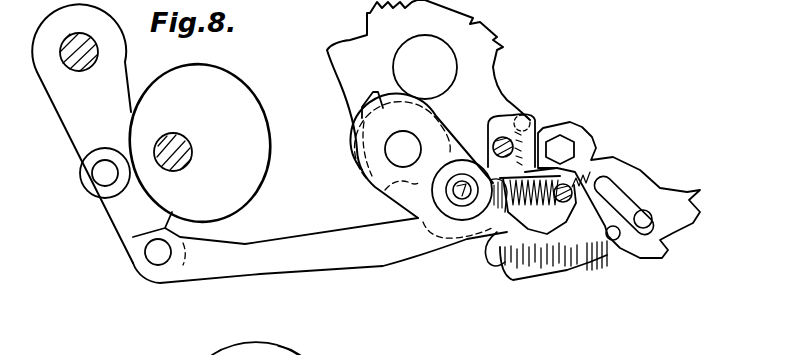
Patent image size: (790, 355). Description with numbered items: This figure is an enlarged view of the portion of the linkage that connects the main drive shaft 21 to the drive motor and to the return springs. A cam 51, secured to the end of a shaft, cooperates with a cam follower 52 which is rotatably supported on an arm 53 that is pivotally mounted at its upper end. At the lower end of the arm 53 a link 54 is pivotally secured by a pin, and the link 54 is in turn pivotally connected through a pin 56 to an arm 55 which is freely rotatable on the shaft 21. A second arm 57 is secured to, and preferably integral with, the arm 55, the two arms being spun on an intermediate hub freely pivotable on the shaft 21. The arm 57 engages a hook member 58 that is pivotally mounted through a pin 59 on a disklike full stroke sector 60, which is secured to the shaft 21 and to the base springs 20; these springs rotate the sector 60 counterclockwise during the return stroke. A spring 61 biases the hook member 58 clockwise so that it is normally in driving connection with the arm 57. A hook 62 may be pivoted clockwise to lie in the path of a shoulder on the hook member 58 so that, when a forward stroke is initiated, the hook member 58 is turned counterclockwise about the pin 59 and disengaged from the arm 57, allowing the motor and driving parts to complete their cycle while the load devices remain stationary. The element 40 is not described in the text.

The base springs 20 is at (553, 226).
The main drive shaft 21 is at (397, 148).
The drum 40 is at (263, 353).
The cam 51 is at (238, 146).
The cam follower 52 is at (88, 179).
The arm 53 is at (110, 220).
The link 54 is at (312, 263).
The arm 55 is at (453, 135).
The pin 56 is at (455, 203).
The second arm 57 is at (380, 190).
The hook member 58 is at (593, 158).
The pin 59 is at (511, 113).
The full stroke sector 60 is at (500, 46).
The spring 61 is at (547, 125).
The hook 62 is at (607, 239).